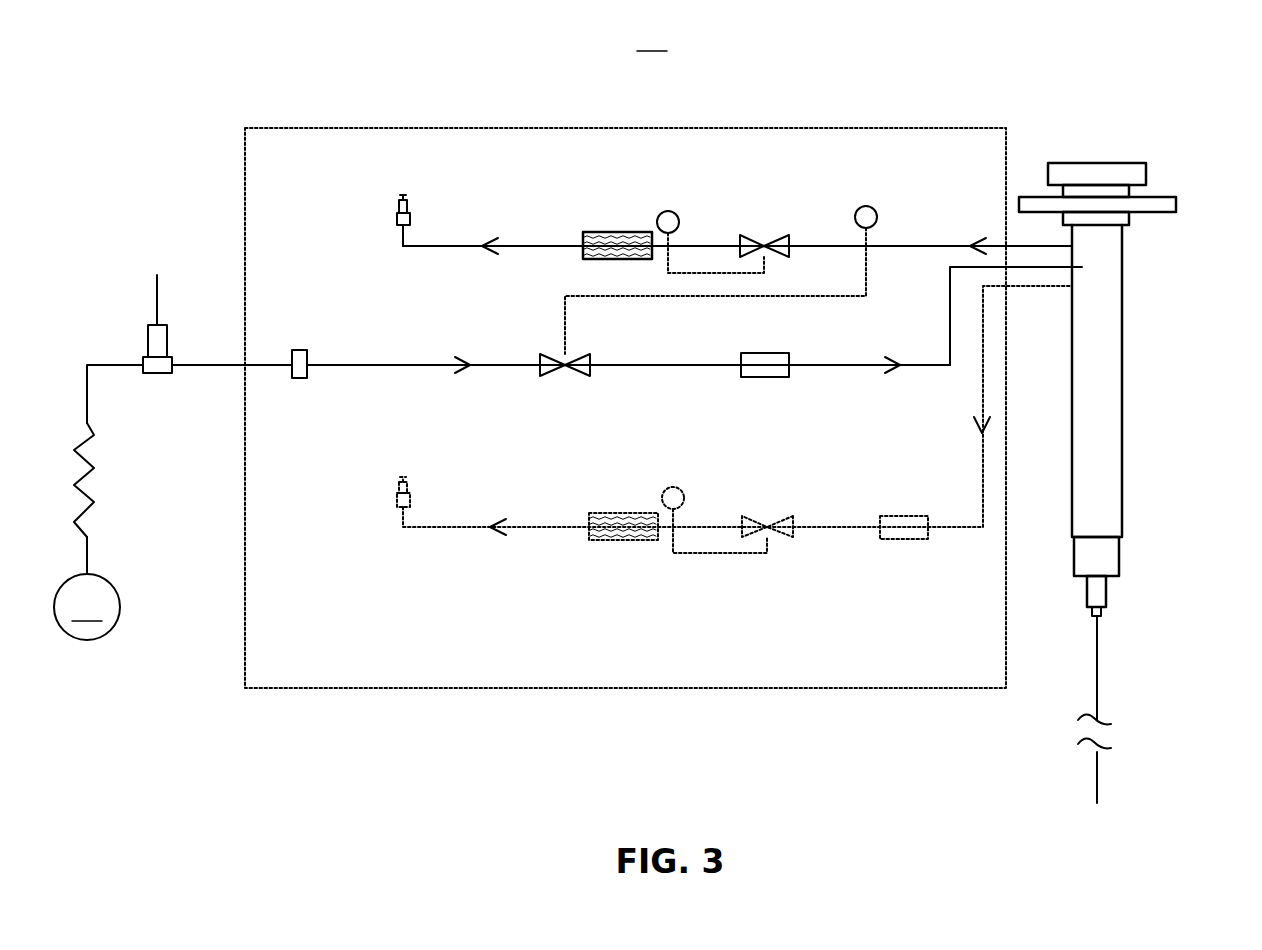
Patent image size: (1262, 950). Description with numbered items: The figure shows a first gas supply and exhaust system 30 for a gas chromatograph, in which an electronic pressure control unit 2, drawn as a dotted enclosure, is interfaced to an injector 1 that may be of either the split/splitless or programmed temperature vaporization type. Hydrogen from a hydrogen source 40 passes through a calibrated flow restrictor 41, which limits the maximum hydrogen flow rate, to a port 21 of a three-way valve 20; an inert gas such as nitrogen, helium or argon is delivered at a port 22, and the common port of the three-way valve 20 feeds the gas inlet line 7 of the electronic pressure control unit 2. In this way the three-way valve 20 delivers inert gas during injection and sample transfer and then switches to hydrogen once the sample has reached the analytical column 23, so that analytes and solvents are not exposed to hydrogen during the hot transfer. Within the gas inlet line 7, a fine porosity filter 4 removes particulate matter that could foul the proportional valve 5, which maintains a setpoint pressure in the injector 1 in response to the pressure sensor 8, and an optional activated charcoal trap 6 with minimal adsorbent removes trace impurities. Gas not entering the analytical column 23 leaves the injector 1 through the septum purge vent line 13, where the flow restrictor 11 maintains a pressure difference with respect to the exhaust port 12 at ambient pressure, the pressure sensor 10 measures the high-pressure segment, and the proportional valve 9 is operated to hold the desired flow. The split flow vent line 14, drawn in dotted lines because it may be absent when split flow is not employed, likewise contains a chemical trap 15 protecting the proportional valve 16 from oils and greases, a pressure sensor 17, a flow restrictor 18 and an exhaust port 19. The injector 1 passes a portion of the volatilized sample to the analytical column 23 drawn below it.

The injector 1 is at (1170, 249).
The electronic pressure control unit 2 is at (370, 128).
The fine porosity filter 4 is at (307, 355).
The proportional valve 5 is at (561, 387).
The activated charcoal trap 6 is at (765, 377).
The gas inlet line 7 is at (213, 365).
The pressure sensor 8 is at (875, 210).
The proportional valve 9 is at (776, 217).
The pressure sensor 10 is at (676, 212).
The flow restrictor 11 is at (613, 232).
The exhaust port 12 is at (397, 219).
The septum purge vent line 13 is at (930, 246).
The split flow vent line 14 is at (830, 527).
The chemical trap 15 is at (902, 516).
The proportional valve 16 is at (763, 500).
The pressure sensor 17 is at (680, 490).
The flow restrictor 18 is at (623, 513).
The exhaust port 19 is at (396, 495).
The three-way valve 20 is at (163, 375).
The port 21 is at (127, 362).
The port 22 is at (156, 297).
The analytical column 23 is at (1097, 683).
The gas supply and exhaust system 30 is at (651, 38).
The hydrogen source 40 is at (87, 607).
The calibrated flow restrictor 41 is at (112, 498).